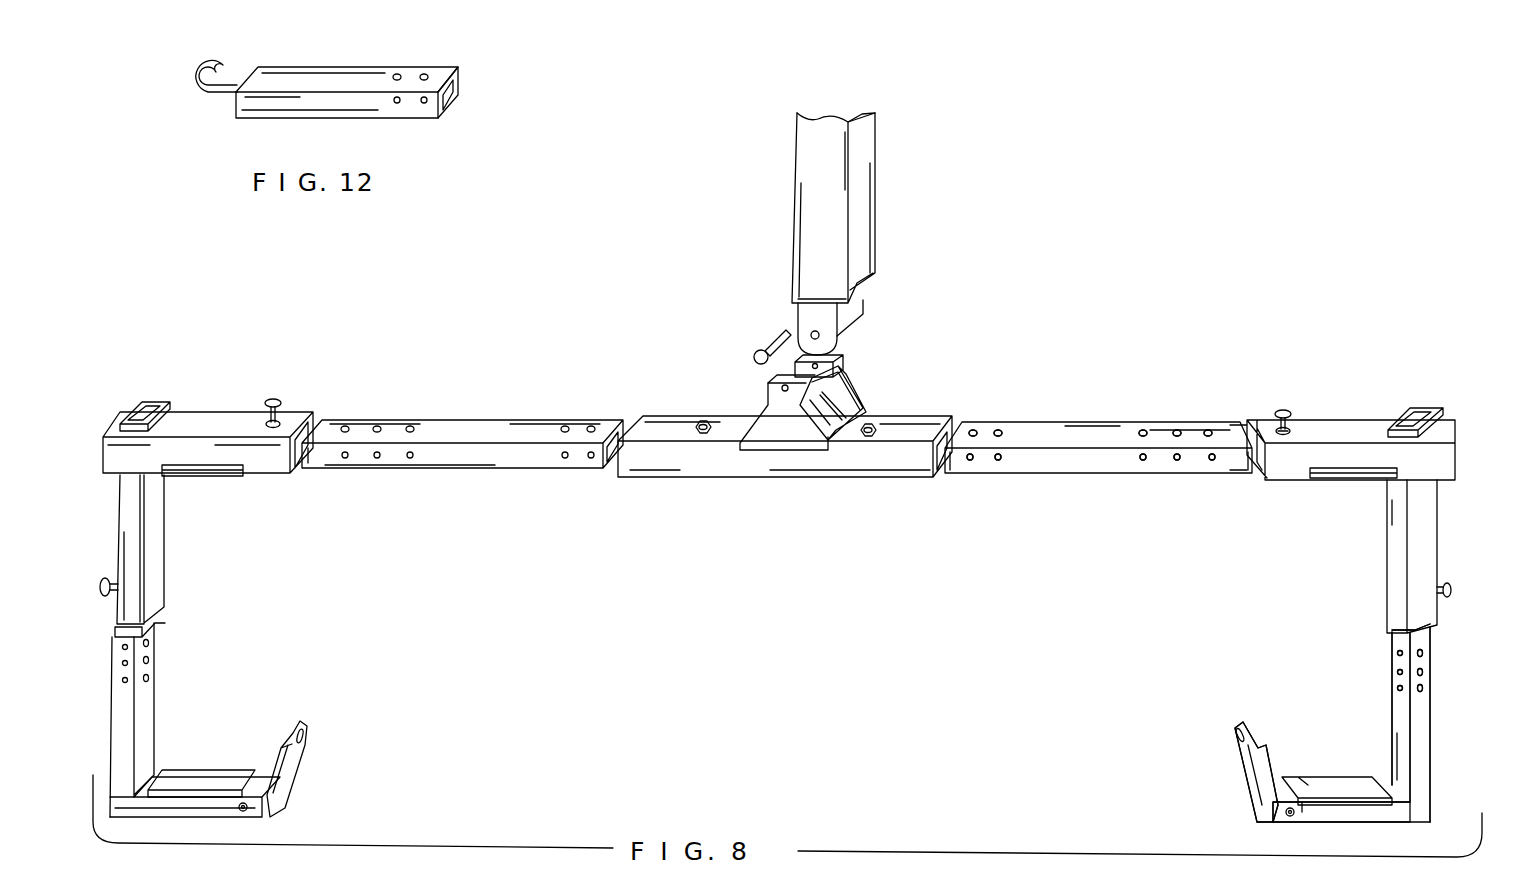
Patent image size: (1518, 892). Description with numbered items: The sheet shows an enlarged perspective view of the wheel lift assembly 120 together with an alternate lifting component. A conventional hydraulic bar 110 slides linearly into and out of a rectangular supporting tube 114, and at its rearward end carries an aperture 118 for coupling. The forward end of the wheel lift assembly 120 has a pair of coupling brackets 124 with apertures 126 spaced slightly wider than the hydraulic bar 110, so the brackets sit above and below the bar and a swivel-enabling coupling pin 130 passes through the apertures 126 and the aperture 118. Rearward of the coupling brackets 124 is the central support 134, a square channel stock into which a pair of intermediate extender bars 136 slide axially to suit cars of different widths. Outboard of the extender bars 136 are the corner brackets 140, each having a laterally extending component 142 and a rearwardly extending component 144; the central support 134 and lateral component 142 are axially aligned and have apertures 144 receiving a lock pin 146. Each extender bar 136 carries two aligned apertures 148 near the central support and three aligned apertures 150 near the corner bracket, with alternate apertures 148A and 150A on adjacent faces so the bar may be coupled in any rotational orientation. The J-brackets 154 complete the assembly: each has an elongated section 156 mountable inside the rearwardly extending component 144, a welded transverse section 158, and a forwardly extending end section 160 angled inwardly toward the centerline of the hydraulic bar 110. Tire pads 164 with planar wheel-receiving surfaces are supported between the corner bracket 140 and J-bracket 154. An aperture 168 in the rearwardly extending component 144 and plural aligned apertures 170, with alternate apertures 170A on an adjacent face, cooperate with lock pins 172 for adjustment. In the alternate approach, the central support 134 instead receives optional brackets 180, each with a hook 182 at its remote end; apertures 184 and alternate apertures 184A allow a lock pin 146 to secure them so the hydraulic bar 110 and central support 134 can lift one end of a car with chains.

In FIG. 8, the hydraulic bar 110 is at (866, 312).
In FIG. 8, the rectangular supporting tube 114 is at (876, 192).
In FIG. 8, the aperture 118 is at (785, 386).
In FIG. 8, the wheel lift assembly 120 is at (968, 415).
In FIG. 8, the coupling brackets 124 is at (855, 405).
In FIG. 8, the apertures 126 is at (812, 370).
In FIG. 8, the swivel-enabling coupling pin 130 is at (786, 338).
In FIG. 8, the central support 134 is at (718, 470).
In FIG. 8, the intermediate extender bars 136 is at (452, 468).
In FIG. 8, the corner brackets 140 is at (202, 412).
In FIG. 8, the laterally extending component 142 is at (1370, 420).
In FIG. 8, the rearwardly extending component 144 is at (908, 440).
In FIG. 8, the lock pin 146 is at (862, 438).
In FIG. 8, the apertures 148 is at (976, 431).
In FIG. 8, the alternate apertures 148A is at (972, 460).
In FIG. 8, the apertures 150 is at (1207, 430).
In FIG. 8, the alternate apertures 150A is at (1210, 460).
In FIG. 8, the J-brackets 154 is at (160, 760).
In FIG. 8, the elongated section 156 is at (1415, 705).
In FIG. 8, the transverse section 158 is at (1363, 815).
In FIG. 8, the forwardly extending end section 160 is at (1250, 796).
In FIG. 8, the tire pads 164 is at (1340, 470).
In FIG. 8, the aperture 168 is at (1397, 625).
In FIG. 8, the aligned apertures 170 is at (1398, 688).
In FIG. 8, the alternate apertures 170A is at (1423, 688).
In FIG. 8, the lock pins 172 is at (1440, 588).
In FIG. 12, the optional brackets 180 is at (312, 72).
In FIG. 12, the hook 182 is at (198, 89).
In FIG. 12, the apertures 184 is at (426, 75).
In FIG. 12, the alternate apertures 184A is at (425, 103).